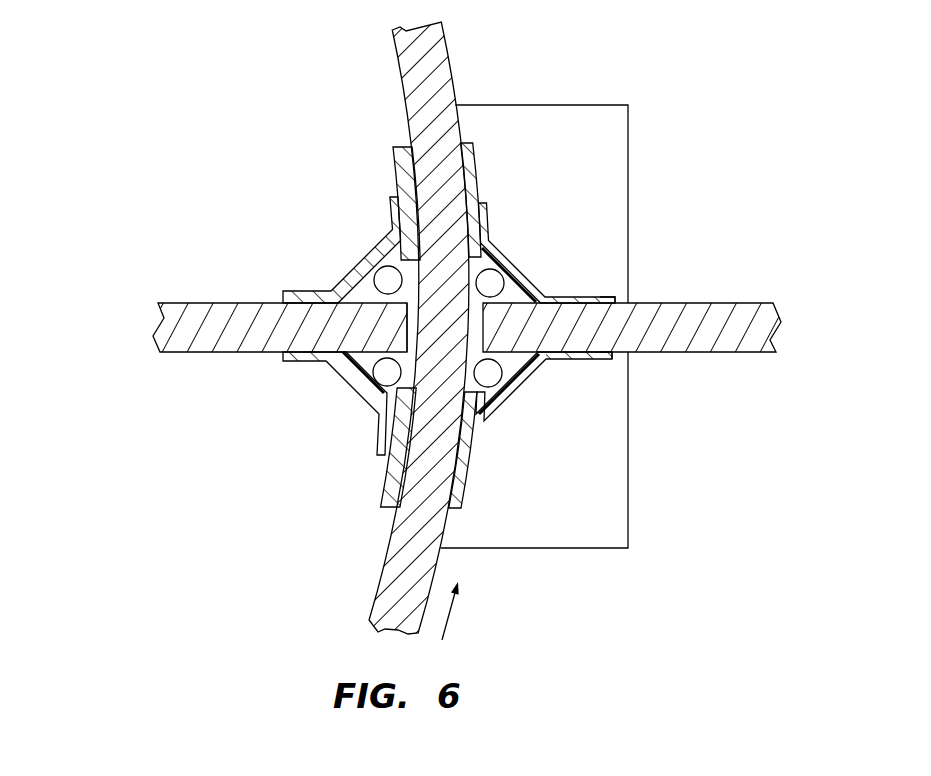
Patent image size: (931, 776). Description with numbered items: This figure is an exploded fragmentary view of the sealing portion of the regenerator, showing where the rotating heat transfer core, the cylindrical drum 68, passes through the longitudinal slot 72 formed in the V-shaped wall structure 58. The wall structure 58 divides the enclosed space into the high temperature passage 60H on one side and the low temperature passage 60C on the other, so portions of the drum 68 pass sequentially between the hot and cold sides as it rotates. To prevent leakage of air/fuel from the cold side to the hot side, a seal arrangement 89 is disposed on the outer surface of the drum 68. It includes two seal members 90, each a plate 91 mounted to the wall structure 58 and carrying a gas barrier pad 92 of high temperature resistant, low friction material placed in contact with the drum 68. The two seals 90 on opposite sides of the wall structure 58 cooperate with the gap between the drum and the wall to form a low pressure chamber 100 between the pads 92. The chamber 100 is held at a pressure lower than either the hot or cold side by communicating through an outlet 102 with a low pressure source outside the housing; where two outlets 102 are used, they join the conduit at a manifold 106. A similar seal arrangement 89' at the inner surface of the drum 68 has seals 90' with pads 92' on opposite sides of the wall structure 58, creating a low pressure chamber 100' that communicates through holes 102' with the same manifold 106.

The drum 68 is at (445, 38).
The manifold 106 is at (545, 108).
The wall structure 58 is at (195, 352).
The longitudinal slot 72 is at (412, 334).
The seal arrangement 89 is at (663, 346).
The seal arrangement 89' is at (136, 265).
The pad 92 is at (480, 330).
The pad 92' is at (373, 367).
The seal member 90 is at (545, 319).
The seal 90' is at (331, 319).
The outlet 102 is at (541, 361).
The hole 102' is at (343, 421).
The low pressure chamber 100 is at (533, 319).
The low pressure chamber 100' is at (317, 307).
The plate 91 is at (628, 298).
The low temperature passage 60C is at (701, 247).
The high temperature passage 60H is at (700, 453).